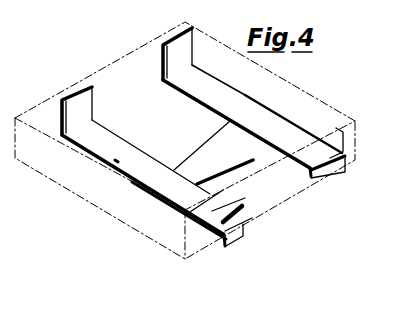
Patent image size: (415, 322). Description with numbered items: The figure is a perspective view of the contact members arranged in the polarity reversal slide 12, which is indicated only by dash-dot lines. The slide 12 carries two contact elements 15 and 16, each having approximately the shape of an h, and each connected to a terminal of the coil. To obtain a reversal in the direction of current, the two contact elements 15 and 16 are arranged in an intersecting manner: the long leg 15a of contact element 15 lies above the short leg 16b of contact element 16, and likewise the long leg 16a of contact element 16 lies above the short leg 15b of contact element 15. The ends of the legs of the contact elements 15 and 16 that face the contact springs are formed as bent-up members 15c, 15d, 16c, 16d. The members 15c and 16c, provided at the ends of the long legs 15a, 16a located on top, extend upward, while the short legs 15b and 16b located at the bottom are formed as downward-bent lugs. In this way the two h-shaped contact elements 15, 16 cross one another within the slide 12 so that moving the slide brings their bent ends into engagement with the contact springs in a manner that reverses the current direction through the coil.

The slide 12 is at (120, 80).
The contact element 15 is at (233, 172).
The long leg 15a is at (116, 160).
The short leg 15b is at (292, 163).
The bent-up member 15c is at (249, 224).
The bent-up member 15d is at (325, 186).
The contact element 16 is at (188, 150).
The long leg 16a is at (258, 108).
The short leg 16b is at (172, 212).
The bent-up member 16c is at (340, 150).
The bent-up member 16d is at (227, 247).